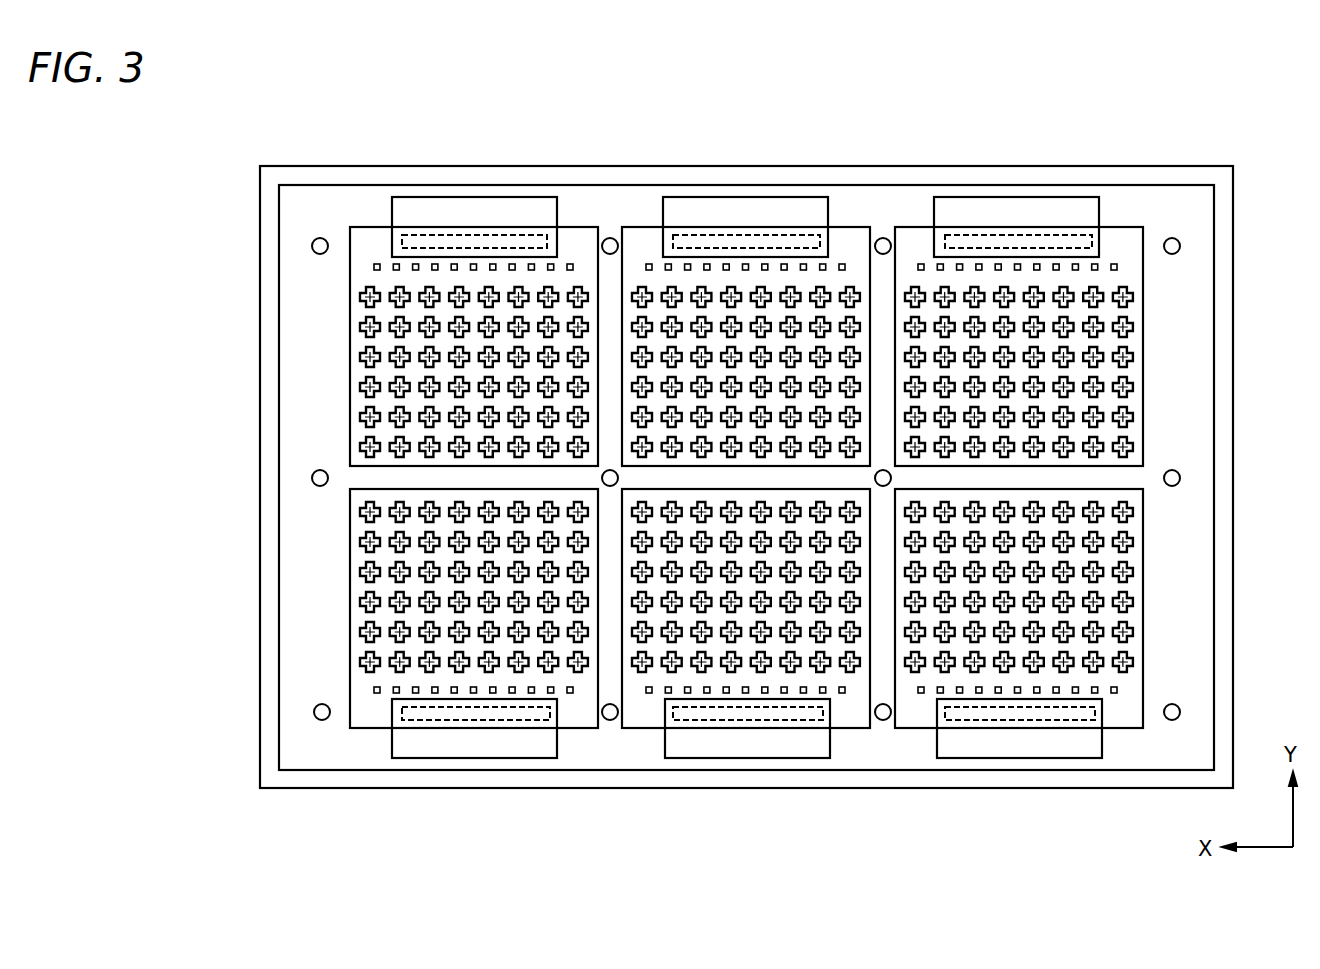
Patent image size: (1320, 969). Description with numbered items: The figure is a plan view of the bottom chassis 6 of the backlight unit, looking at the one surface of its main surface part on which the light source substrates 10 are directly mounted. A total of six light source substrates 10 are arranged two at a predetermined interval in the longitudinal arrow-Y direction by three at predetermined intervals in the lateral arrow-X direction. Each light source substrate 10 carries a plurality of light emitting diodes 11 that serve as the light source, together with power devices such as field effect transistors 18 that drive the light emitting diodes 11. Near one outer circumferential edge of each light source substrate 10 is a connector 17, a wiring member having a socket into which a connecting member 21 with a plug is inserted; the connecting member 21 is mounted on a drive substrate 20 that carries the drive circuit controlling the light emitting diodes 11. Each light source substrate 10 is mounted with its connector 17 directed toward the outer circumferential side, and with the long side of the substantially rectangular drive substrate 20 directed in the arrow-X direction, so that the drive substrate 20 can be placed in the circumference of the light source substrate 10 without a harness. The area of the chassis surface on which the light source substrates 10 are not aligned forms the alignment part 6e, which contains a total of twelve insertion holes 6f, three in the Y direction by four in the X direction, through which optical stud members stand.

The bottom chassis 6 is at (262, 663).
The alignment part 6e is at (312, 577).
The insertion hole 6f is at (312, 246).
The light source substrate 10 is at (367, 245).
The light emitting diode 11 is at (1128, 297).
The connector 17 is at (748, 479).
The field effect transistor 18 is at (1120, 690).
The drive substrate 20 is at (483, 212).
The connecting member 21 is at (415, 240).